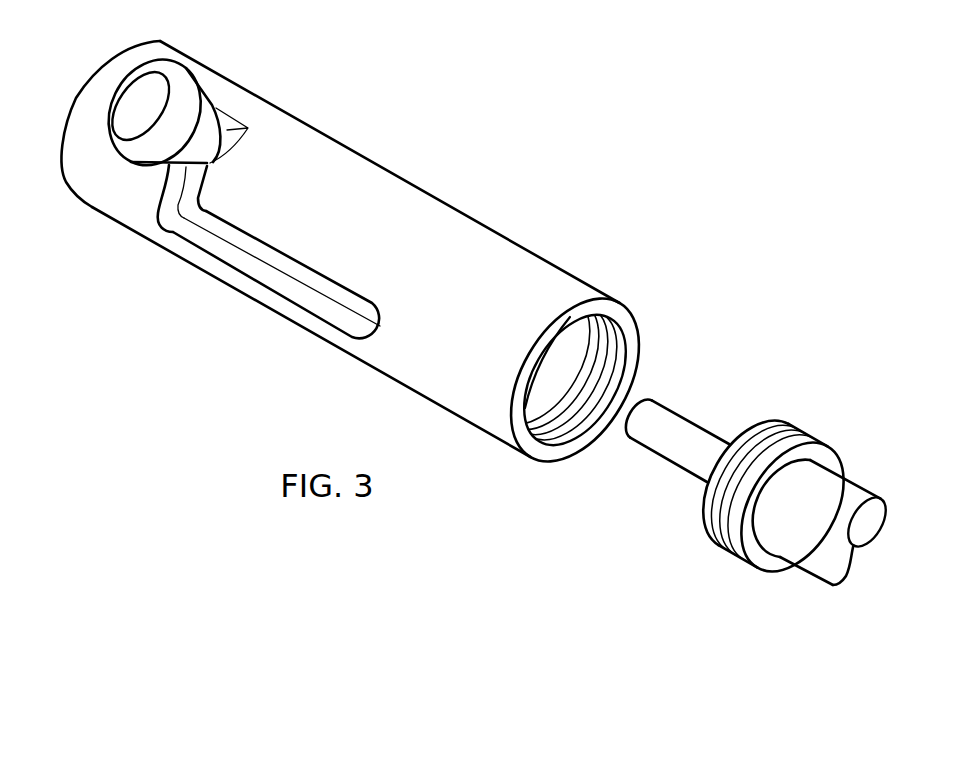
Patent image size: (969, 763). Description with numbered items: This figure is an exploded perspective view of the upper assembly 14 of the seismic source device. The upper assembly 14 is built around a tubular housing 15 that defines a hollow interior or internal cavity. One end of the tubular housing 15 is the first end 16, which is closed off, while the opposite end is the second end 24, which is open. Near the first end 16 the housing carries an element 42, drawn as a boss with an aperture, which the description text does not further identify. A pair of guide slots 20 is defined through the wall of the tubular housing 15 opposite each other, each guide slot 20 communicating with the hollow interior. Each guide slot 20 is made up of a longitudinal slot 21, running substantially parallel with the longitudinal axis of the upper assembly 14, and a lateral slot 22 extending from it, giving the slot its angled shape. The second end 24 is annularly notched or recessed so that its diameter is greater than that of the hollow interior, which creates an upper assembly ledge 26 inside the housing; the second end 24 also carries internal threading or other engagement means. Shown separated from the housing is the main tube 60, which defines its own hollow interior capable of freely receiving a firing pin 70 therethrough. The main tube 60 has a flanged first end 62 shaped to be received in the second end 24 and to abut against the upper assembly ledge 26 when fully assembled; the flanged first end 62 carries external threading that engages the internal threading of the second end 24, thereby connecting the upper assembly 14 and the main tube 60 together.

The upper assembly 14 is at (502, 230).
The tubular housing 15 is at (377, 200).
The first end 16 is at (117, 55).
The guide slots 20 is at (298, 265).
The longitudinal slot 21 is at (330, 293).
The lateral slot 22 is at (193, 178).
The second end 24 is at (613, 359).
The upper assembly ledge 26 is at (548, 395).
The mounting boss with aperture 42 is at (180, 72).
The main tube 60 is at (810, 573).
The flanged first end 62 is at (787, 425).
The firing pin 70 is at (697, 422).